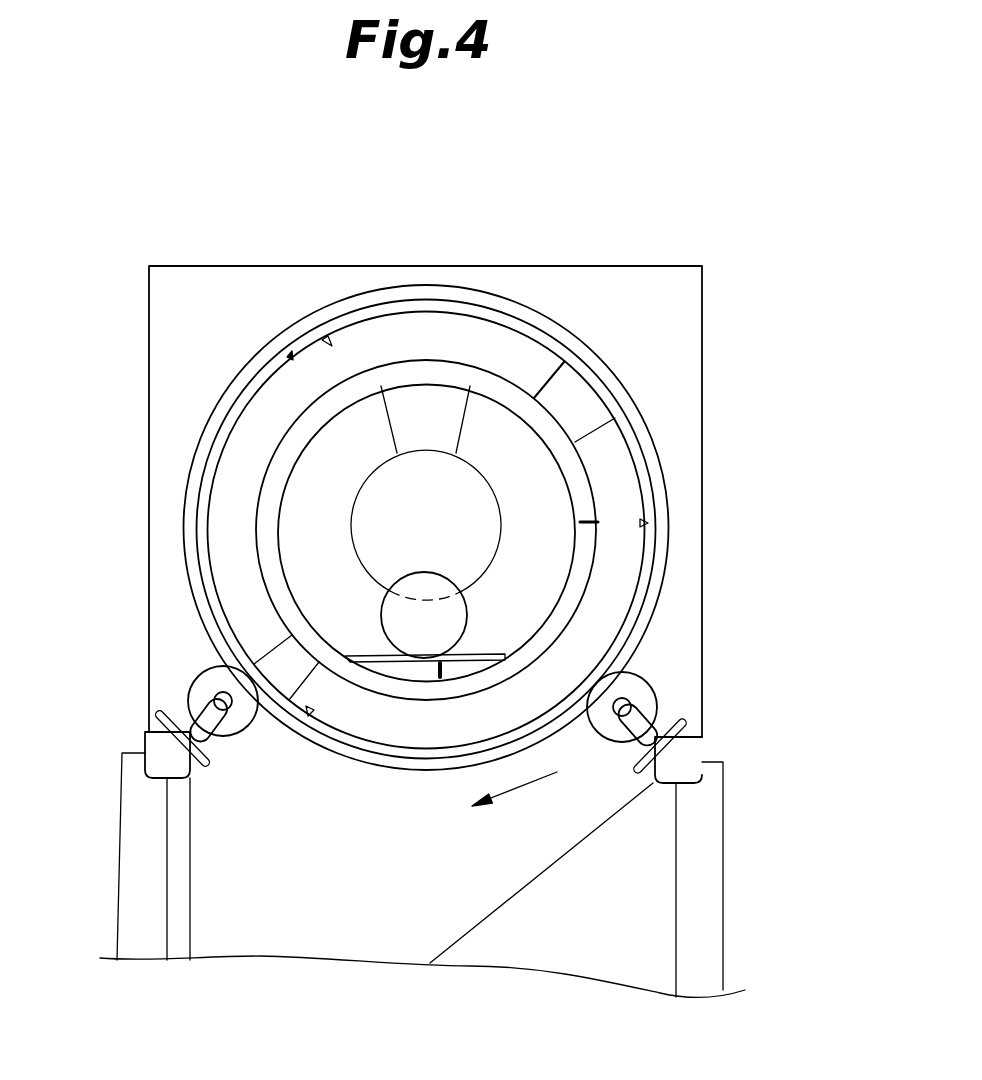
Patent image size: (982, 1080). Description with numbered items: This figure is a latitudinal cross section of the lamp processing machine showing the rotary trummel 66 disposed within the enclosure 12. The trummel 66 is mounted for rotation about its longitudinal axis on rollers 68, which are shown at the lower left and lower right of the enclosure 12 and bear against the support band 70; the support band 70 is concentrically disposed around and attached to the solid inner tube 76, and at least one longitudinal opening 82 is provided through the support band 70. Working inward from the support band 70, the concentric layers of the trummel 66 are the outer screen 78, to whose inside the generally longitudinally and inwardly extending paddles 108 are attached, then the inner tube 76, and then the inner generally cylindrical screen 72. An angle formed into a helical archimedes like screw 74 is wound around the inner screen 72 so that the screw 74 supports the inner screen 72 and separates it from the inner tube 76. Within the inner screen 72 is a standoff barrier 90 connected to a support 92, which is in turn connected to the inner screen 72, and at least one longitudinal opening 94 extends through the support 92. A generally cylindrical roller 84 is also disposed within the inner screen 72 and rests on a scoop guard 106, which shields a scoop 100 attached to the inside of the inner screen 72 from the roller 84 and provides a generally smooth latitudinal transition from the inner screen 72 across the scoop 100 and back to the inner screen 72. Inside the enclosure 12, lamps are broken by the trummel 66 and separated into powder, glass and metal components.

The enclosure 12 is at (673, 310).
The rotary trummel 66 is at (205, 395).
The rollers 68 is at (250, 740).
The support band 70 is at (510, 352).
The inner screen 72 is at (290, 592).
The helical archimedes like screw 74 is at (590, 521).
The inner tube 76 is at (265, 460).
The outer screen 78 is at (640, 607).
The longitudinal opening 82 is at (587, 403).
The roller 84 is at (472, 622).
The standoff barrier 90 is at (373, 507).
The support 92 is at (308, 560).
The longitudinal opening 94 is at (425, 410).
The scoop 100 is at (440, 677).
The scoop guard 106 is at (387, 662).
The paddles 108 is at (322, 340).